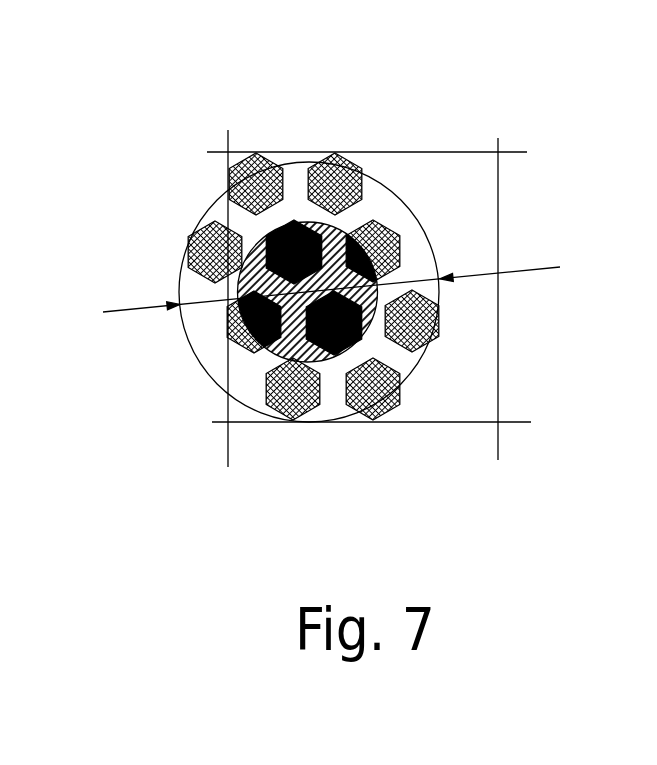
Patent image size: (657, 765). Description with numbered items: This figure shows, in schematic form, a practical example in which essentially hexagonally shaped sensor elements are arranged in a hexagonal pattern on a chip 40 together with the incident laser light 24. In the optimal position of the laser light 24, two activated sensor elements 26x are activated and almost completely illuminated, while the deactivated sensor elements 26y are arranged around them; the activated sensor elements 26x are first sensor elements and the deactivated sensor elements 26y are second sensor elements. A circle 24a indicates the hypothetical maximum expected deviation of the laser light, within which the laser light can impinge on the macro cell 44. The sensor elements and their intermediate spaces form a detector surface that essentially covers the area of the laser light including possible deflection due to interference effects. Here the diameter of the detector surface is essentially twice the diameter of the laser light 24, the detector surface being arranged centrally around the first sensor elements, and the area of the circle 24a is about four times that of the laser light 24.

The macro cell 44 is at (205, 107).
The chip 40 is at (480, 382).
The laser light 24 is at (344, 229).
The circle of maximum expected deviation 24a is at (343, 228).
The activated sensor elements 26x is at (263, 240).
The deactivated sensor elements 26y is at (442, 325).